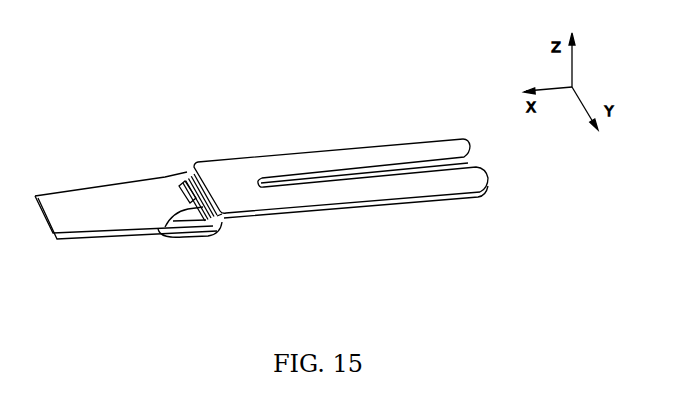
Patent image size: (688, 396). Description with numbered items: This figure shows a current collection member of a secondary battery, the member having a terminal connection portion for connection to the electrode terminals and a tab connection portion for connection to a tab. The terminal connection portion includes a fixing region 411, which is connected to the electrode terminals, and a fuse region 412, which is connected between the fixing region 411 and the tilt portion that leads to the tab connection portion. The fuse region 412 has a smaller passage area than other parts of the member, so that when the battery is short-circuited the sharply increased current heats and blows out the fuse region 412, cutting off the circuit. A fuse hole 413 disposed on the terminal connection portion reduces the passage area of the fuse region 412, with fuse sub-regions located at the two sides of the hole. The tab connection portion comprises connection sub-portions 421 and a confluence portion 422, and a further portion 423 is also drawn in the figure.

The fixing region 411 is at (108, 203).
The fuse region 412 is at (183, 178).
The fuse hole 413 is at (168, 227).
The connection sub-portion 421 is at (327, 160).
The confluence portion 422 is at (235, 181).
The connecting portion 423 is at (231, 222).